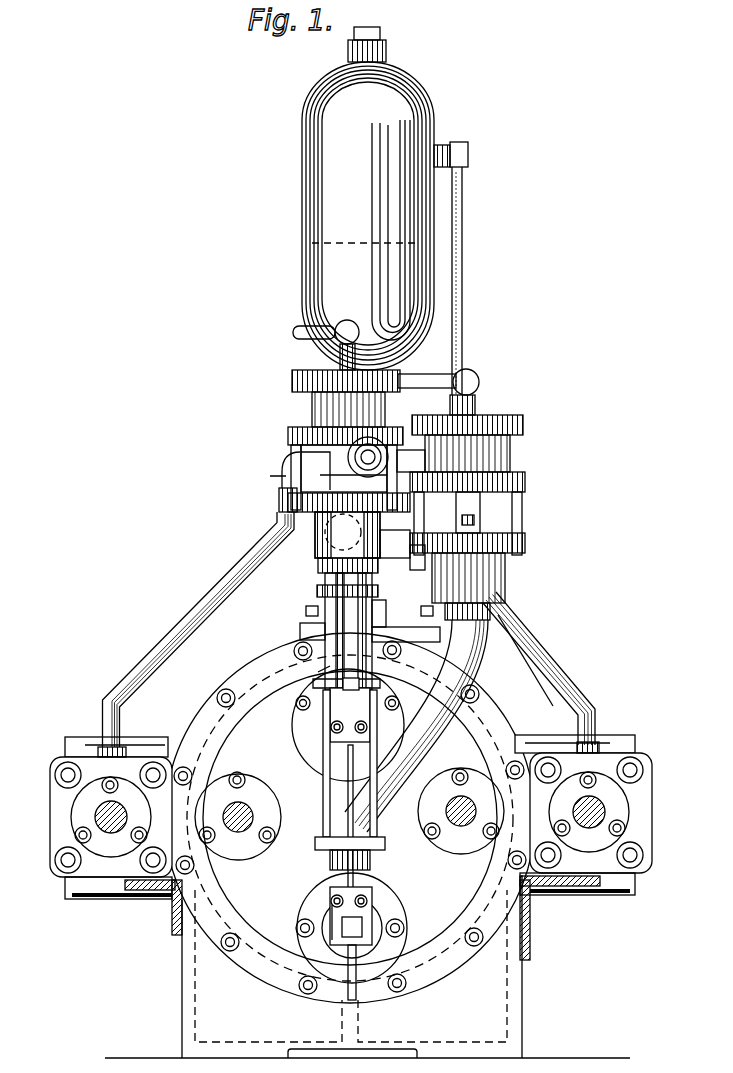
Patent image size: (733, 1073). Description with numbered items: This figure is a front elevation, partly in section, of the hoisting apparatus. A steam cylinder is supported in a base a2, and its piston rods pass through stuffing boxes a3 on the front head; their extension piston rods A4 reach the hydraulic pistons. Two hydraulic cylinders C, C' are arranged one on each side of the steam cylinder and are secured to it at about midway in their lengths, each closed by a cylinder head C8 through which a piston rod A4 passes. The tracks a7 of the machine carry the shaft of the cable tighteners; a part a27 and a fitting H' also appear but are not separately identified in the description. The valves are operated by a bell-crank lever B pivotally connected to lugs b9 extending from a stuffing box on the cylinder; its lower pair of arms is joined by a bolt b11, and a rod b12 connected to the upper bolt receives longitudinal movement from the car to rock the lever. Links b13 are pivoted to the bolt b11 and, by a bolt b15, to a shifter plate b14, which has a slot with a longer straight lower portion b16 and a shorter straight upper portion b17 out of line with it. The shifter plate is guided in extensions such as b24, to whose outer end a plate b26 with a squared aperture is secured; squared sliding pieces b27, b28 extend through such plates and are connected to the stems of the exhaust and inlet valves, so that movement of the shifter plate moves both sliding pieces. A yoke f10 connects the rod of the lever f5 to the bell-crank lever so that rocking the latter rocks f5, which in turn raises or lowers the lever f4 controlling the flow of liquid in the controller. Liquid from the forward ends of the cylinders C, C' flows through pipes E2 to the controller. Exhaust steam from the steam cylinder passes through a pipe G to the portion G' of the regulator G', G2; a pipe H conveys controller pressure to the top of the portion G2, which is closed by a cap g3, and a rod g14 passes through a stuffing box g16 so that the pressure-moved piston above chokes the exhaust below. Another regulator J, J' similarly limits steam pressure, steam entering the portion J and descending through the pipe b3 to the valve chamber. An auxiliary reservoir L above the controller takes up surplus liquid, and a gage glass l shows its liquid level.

The auxiliary reservoir L is at (385, 198).
The gage glass l is at (456, 214).
The pipe connection H' is at (310, 345).
The pipe H is at (438, 374).
The regulator portion J' is at (356, 440).
The regulator portion J is at (356, 533).
The cap g3 is at (502, 421).
The regulator portion G2 is at (469, 485).
The rod g14 is at (472, 509).
The stuffing box g16 is at (475, 521).
The regulator portion G' is at (467, 576).
The pipe G is at (416, 726).
The pipes E2 is at (348, 604).
The cylinder heads C8 is at (349, 806).
The piston rods A4 is at (593, 811).
The hydraulic cylinder C' is at (123, 906).
The hydraulic cylinder C is at (577, 916).
The tracks a7 is at (152, 890).
The frame flange a27 is at (562, 886).
The base a2 is at (367, 845).
The stuffing boxes a3 is at (349, 814).
The yoke f10 is at (333, 585).
The lower slot portion b16 is at (330, 600).
The lever f4 is at (325, 612).
The rod b12 is at (345, 606).
The pipe b3 is at (370, 614).
The lever f5 is at (386, 624).
The bell-crank lever B is at (378, 673).
The bolt b11 is at (388, 690).
The lugs b9 is at (318, 672).
The sliding piece b28 is at (342, 712).
The plate b26 is at (338, 738).
The links b13 is at (345, 758).
The shifter plate b14 is at (360, 862).
The bolt b15 is at (322, 860).
The sliding piece b27 is at (360, 920).
The extension b24 is at (362, 936).
The upper slot portion b17 is at (328, 932).